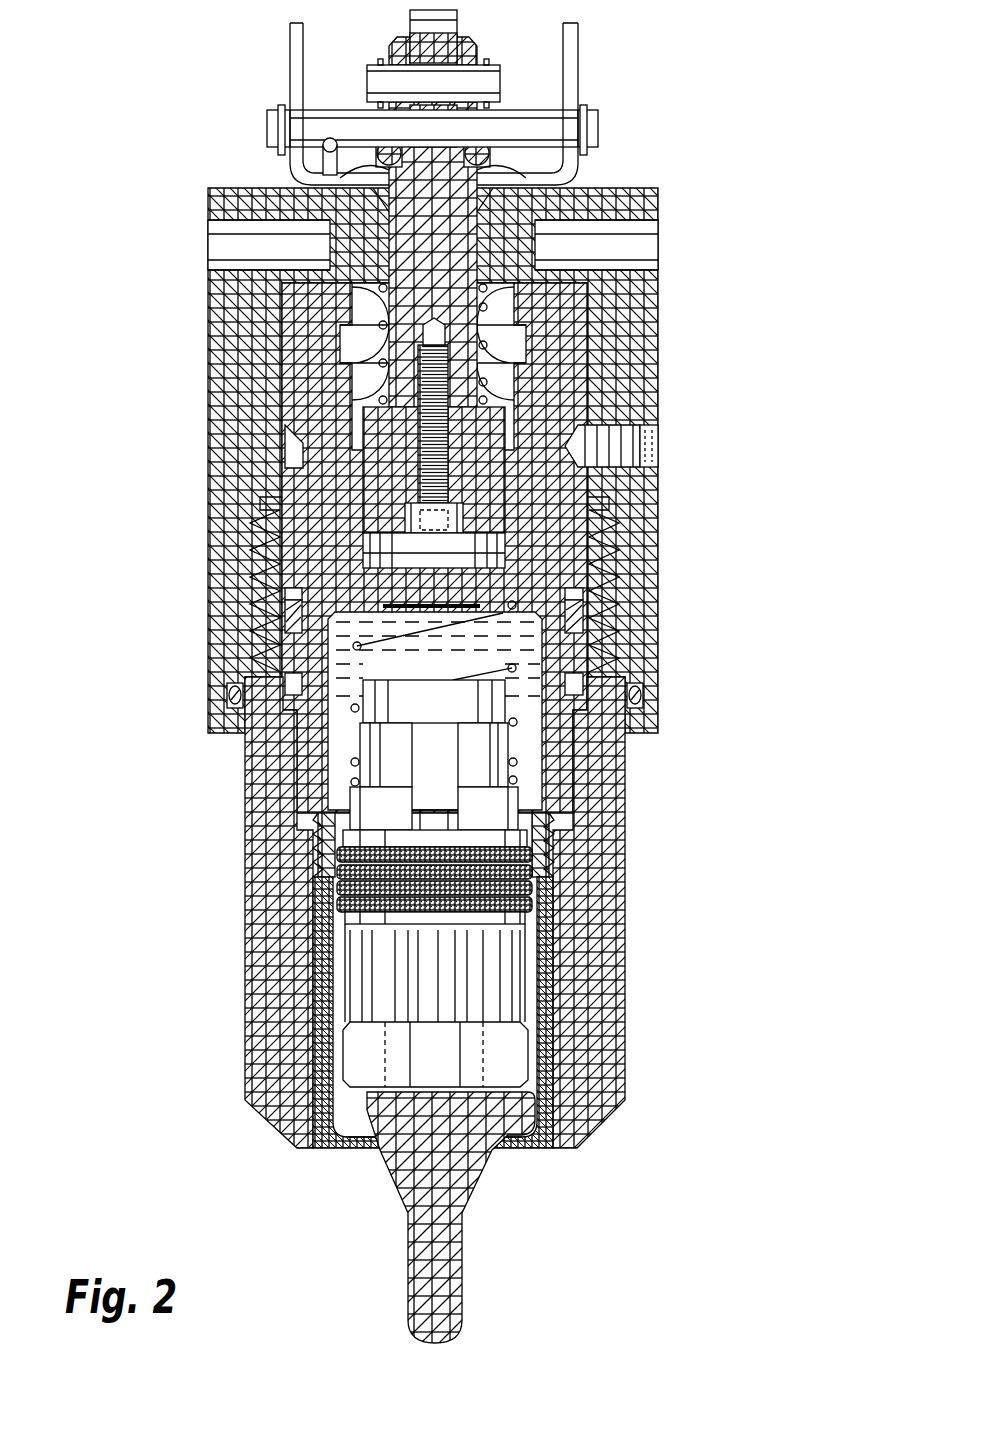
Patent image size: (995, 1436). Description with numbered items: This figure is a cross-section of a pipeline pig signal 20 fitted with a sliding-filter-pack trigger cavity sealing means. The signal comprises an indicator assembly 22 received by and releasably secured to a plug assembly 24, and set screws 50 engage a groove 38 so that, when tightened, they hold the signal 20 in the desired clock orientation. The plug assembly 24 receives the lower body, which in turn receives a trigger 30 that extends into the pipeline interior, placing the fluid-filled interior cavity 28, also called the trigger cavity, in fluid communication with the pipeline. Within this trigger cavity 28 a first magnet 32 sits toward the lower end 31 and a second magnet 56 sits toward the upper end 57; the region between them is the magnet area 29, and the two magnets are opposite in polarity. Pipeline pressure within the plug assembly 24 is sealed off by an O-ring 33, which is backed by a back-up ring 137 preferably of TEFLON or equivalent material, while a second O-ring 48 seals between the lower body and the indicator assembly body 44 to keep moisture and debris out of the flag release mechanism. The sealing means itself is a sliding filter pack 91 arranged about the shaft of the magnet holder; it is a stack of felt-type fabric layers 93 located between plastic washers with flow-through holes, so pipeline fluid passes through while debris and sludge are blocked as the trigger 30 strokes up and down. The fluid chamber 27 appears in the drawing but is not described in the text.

The pipeline pig signal 20 is at (476, 676).
The indicator assembly 22 is at (652, 320).
The plug assembly 24 is at (323, 1025).
The fluid chamber 27 is at (538, 705).
The interior cavity 28 is at (505, 947).
The magnet area 29 is at (467, 658).
The trigger 30 is at (458, 1238).
The lower end 31 is at (512, 1138).
The first magnet 32 is at (353, 678).
The O-ring 33 is at (280, 613).
The groove 38 is at (280, 453).
The indicator assembly body 44 is at (637, 567).
The second O-ring 48 is at (645, 693).
The set screws 50 is at (635, 447).
The second magnet 56 is at (347, 413).
The upper end 57 is at (347, 310).
The sliding filter pack 91 is at (317, 897).
The felt-type fabric layers 93 is at (520, 888).
The back-up ring 137 is at (282, 592).